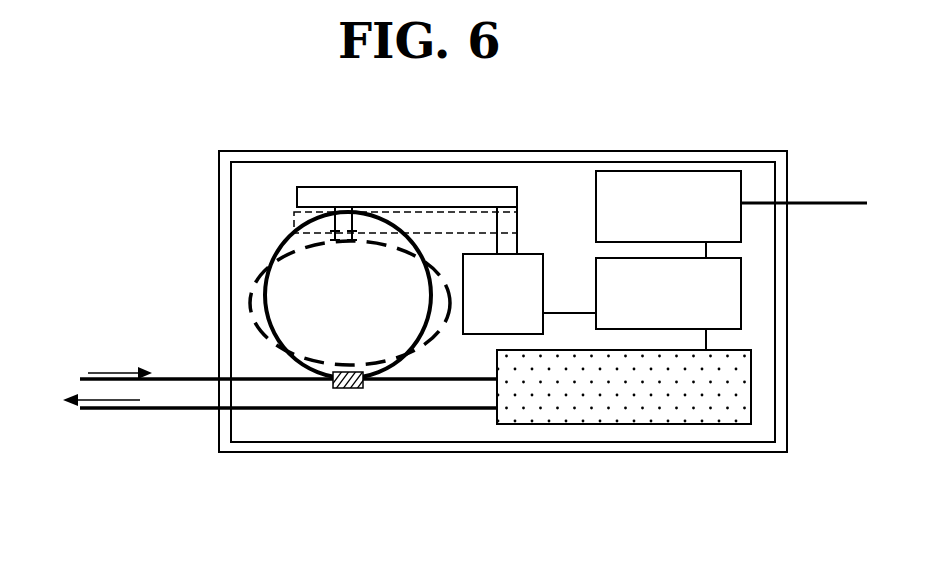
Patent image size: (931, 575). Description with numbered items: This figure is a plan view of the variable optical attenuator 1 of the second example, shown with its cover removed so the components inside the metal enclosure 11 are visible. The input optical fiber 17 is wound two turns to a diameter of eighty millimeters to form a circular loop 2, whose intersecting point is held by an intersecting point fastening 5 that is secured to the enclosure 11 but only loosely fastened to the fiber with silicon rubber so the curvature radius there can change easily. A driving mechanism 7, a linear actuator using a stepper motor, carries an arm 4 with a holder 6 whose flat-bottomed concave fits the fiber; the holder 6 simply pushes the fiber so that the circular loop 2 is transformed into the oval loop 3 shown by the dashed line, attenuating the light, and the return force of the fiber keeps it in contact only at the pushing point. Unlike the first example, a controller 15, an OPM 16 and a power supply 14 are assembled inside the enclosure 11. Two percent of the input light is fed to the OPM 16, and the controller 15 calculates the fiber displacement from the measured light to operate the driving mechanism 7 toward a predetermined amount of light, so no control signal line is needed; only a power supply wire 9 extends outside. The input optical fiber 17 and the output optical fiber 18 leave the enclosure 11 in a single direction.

The variable optical attenuator 1 is at (168, 137).
The circular loop 2 is at (287, 239).
The oval loop 3 is at (250, 297).
The arm 4 is at (400, 198).
The intersecting point fastening 5 is at (362, 385).
The holder 6 is at (338, 212).
The driving mechanism 7 is at (522, 275).
The power supply wire 9 is at (807, 206).
The enclosure 11 is at (225, 452).
The power supply 14 is at (725, 193).
The controller 15 is at (725, 313).
The OPM 16 is at (570, 403).
The input optical fiber 17 is at (193, 376).
The output optical fiber 18 is at (190, 412).